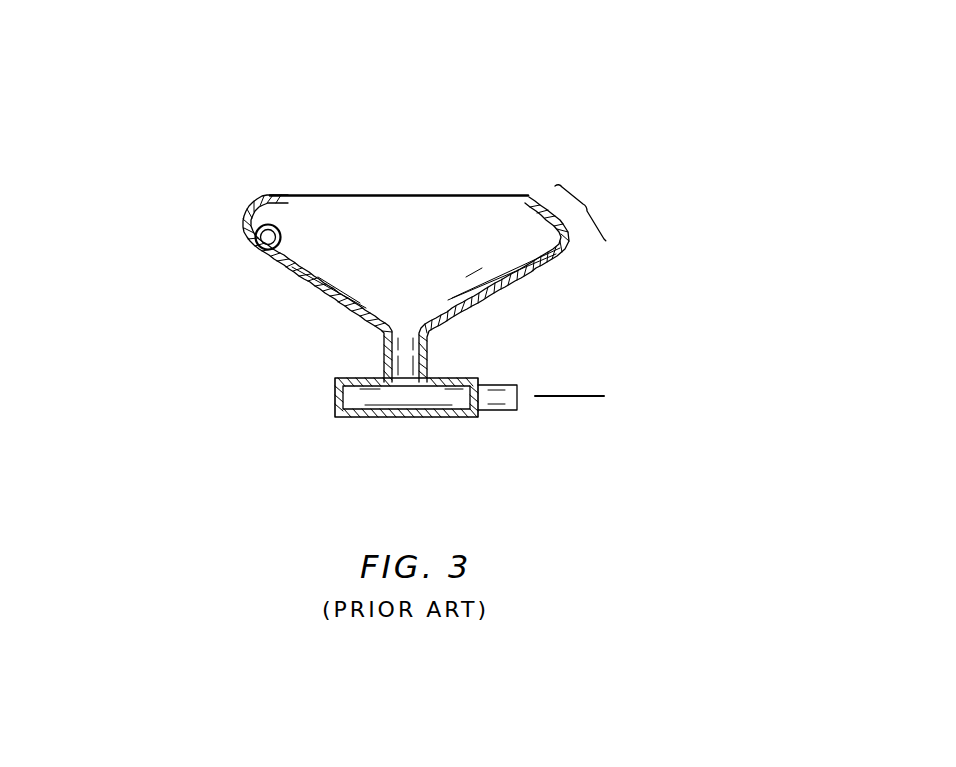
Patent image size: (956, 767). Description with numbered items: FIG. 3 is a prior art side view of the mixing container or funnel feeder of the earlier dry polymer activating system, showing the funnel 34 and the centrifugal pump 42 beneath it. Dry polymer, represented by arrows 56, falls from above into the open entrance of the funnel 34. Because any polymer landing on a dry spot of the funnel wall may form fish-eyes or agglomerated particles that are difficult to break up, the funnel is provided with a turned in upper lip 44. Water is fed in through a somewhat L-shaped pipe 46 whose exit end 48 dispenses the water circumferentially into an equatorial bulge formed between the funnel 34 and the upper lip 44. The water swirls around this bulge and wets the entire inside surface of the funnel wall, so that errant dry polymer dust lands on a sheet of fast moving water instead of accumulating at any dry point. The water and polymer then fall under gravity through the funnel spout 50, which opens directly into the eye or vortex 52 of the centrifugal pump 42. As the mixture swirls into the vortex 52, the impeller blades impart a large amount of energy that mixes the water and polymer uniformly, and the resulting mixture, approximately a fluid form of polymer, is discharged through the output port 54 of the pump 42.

The funnel 34 is at (590, 283).
The centrifugal pump 42 is at (335, 392).
The turned in upper lip 44 is at (586, 204).
The L-shaped pipe 46 is at (288, 222).
The exit end 48 is at (255, 208).
The funnel spout 50 is at (428, 350).
The vortex 52 is at (373, 400).
The output port 54 is at (500, 400).
The dry polymers 56 is at (412, 172).